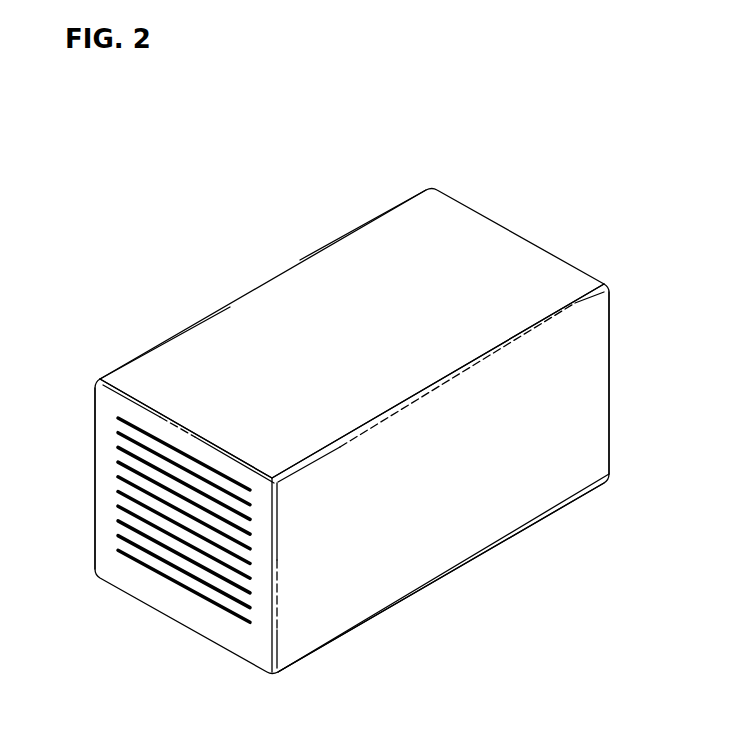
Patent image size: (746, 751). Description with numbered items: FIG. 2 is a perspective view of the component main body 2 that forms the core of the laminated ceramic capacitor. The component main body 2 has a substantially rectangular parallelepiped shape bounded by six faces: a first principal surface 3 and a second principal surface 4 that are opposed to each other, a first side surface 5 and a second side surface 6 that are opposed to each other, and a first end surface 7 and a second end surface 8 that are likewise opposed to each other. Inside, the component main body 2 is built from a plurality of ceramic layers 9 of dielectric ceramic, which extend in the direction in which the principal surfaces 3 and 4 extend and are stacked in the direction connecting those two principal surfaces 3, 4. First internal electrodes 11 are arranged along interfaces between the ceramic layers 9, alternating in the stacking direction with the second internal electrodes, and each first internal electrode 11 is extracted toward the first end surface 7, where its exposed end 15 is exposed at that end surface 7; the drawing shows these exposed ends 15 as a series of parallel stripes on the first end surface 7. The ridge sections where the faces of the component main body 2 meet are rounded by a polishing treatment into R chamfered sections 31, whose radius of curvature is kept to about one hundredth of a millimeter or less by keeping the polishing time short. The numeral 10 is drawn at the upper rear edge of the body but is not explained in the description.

The component main body 2 is at (192, 192).
The first principal surface 3 is at (312, 270).
The second principal surface 4 is at (405, 582).
The first side surface 5 is at (205, 337).
The second side surface 6 is at (500, 522).
The first end surface 7 is at (108, 520).
The second end surface 8 is at (593, 365).
The ceramic layers 9 is at (200, 588).
The top edge seam 10 is at (478, 233).
The first internal electrodes 11 is at (157, 573).
The exposed end 15 is at (218, 615).
The R chamfered section 31 is at (133, 398).